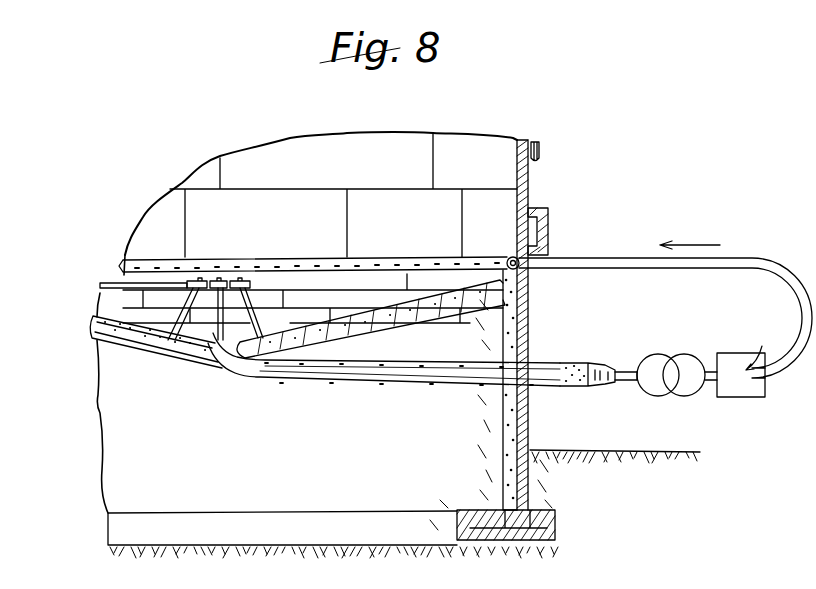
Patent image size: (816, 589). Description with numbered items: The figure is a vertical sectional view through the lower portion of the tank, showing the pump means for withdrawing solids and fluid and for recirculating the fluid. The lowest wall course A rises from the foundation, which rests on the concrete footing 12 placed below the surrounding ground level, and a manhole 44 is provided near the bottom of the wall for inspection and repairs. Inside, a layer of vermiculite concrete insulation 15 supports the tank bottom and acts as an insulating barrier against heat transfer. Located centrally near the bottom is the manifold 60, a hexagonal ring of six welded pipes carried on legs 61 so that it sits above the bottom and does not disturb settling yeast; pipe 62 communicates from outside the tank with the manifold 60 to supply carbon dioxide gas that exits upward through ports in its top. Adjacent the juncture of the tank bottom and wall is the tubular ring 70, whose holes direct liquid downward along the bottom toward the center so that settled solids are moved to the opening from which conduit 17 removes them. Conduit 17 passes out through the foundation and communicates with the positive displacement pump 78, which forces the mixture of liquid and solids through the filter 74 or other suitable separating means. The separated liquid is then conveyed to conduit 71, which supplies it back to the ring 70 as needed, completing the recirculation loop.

The course A is at (502, 202).
The concrete footing 12 is at (487, 540).
The vermiculite concrete insulation 15 is at (122, 340).
The conduit 17 is at (242, 378).
The manhole 44 is at (548, 220).
The manifold 60 is at (242, 272).
The legs 61 is at (205, 325).
The pipe 62 is at (108, 287).
The ring 70 is at (410, 261).
The conduit 71 is at (592, 260).
The filter 74 is at (738, 396).
The positive displacement pump 78 is at (672, 360).